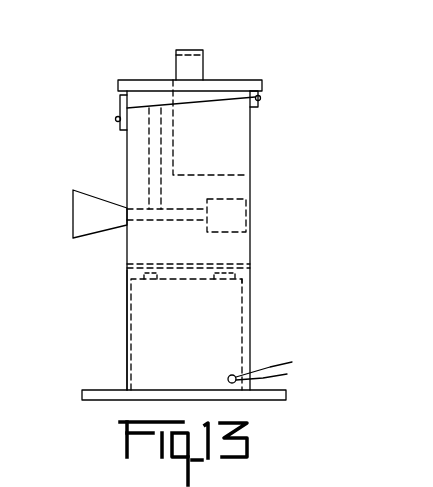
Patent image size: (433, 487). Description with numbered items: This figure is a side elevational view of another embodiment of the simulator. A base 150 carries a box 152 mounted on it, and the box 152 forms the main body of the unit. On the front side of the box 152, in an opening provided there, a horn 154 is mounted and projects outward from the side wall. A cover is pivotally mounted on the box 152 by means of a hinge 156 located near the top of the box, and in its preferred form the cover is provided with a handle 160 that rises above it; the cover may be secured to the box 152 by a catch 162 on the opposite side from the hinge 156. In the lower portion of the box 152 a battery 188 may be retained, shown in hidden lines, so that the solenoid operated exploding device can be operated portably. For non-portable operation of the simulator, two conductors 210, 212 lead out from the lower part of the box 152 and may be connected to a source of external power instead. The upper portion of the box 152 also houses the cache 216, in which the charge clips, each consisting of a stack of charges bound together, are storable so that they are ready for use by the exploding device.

The base 150 is at (85, 393).
The box 152 is at (125, 312).
The horn 154 is at (75, 227).
The hinge 156 is at (260, 100).
The handle 160 is at (203, 64).
The catch 162 is at (121, 124).
The battery 188 is at (150, 350).
The conductor 210 is at (273, 362).
The conductor 212 is at (287, 374).
The cache 216 is at (225, 158).